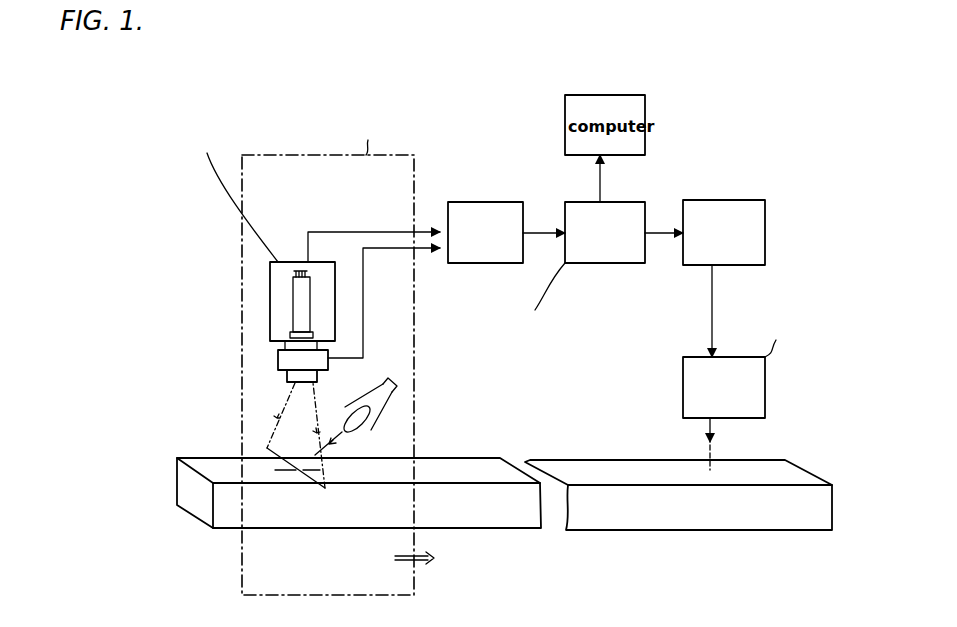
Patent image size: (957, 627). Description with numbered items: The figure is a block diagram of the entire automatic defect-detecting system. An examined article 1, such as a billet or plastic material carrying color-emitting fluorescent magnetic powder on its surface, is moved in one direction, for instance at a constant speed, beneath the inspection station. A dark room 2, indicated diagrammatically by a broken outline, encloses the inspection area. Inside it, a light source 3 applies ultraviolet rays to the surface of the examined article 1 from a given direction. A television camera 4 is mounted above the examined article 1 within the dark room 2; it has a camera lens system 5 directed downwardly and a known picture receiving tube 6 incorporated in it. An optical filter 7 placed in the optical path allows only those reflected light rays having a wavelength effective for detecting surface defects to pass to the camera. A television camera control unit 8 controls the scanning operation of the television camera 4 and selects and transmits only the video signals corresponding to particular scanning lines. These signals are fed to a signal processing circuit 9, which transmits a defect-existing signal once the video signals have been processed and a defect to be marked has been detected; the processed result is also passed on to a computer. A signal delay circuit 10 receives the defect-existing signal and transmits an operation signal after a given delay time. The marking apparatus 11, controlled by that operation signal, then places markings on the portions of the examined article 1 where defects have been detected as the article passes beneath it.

The examined article 1 is at (500, 520).
The dark room 2 is at (240, 550).
The light source 3 is at (392, 408).
The television camera 4 is at (270, 312).
The camera lens system 5 is at (290, 288).
The picture receiving tube 6 is at (278, 362).
The optical filter 7 is at (287, 380).
The television camera control unit 8 is at (490, 202).
The signal processing circuit 9 is at (603, 263).
The signal delay circuit 10 is at (723, 200).
The marking apparatus 11 is at (765, 408).